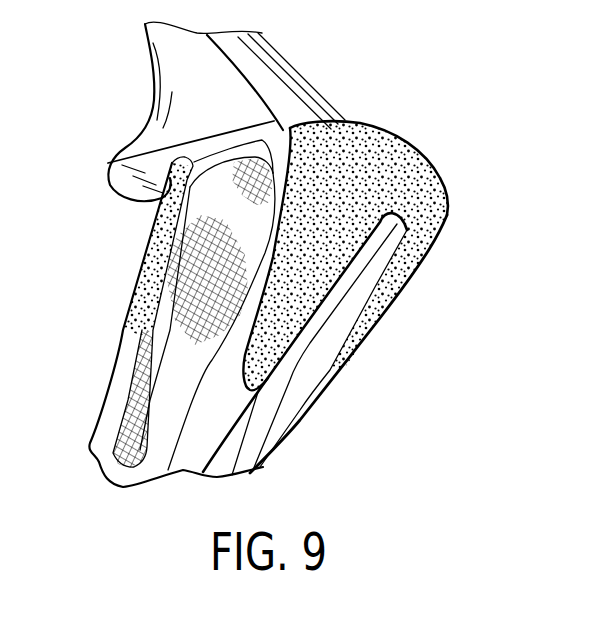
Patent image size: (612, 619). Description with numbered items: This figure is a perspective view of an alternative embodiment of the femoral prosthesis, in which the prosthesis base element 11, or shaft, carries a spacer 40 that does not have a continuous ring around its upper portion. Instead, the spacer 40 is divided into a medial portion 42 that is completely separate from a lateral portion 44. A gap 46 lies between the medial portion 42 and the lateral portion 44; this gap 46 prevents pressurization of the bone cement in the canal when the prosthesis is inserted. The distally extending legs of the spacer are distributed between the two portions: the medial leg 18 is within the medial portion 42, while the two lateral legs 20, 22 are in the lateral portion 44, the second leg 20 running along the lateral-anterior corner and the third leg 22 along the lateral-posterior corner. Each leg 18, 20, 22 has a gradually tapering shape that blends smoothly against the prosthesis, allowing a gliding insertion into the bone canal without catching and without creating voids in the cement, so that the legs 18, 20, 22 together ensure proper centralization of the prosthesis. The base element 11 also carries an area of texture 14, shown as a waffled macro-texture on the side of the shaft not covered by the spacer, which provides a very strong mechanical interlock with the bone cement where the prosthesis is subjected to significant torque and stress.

The prosthesis base element 11 is at (274, 450).
The areas of texture 14 is at (123, 360).
The first leg 18 is at (133, 257).
The second leg 20 is at (285, 345).
The third leg 22 is at (370, 319).
The spacer 40 is at (337, 163).
The medial portion 42 is at (128, 203).
The lateral portion 44 is at (447, 200).
The gap 46 is at (292, 89).